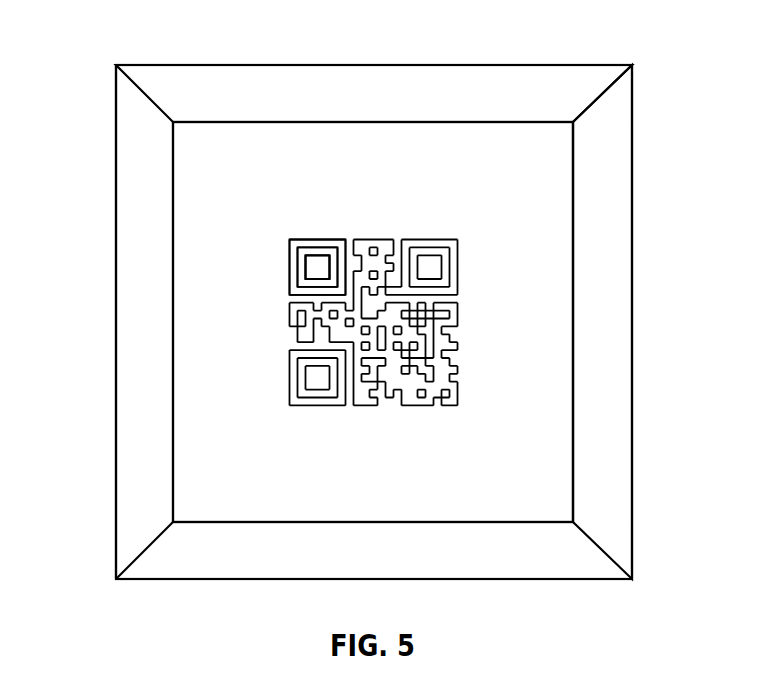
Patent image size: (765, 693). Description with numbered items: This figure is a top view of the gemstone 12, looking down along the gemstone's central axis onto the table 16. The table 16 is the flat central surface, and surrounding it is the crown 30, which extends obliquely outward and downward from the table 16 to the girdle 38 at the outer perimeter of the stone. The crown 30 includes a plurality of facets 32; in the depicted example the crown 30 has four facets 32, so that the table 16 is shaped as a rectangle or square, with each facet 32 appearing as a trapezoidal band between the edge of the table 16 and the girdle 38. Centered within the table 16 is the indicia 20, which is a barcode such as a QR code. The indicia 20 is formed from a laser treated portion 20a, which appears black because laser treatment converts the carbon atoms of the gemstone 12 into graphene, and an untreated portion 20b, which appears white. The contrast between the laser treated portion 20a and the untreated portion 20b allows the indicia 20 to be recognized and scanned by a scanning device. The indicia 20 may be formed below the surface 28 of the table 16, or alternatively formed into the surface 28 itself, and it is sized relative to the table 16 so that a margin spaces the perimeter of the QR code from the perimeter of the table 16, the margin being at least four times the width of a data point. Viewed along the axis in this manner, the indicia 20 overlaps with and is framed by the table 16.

The gemstone 12 is at (146, 33).
The table 16 is at (257, 138).
The indicia 20 is at (315, 416).
The laser treated portion 20a is at (320, 263).
The untreated portion 20b is at (302, 262).
The surface of the table 28 is at (193, 259).
The crown 30 is at (391, 78).
The facets 32 is at (467, 98).
The girdle 38 is at (116, 115).